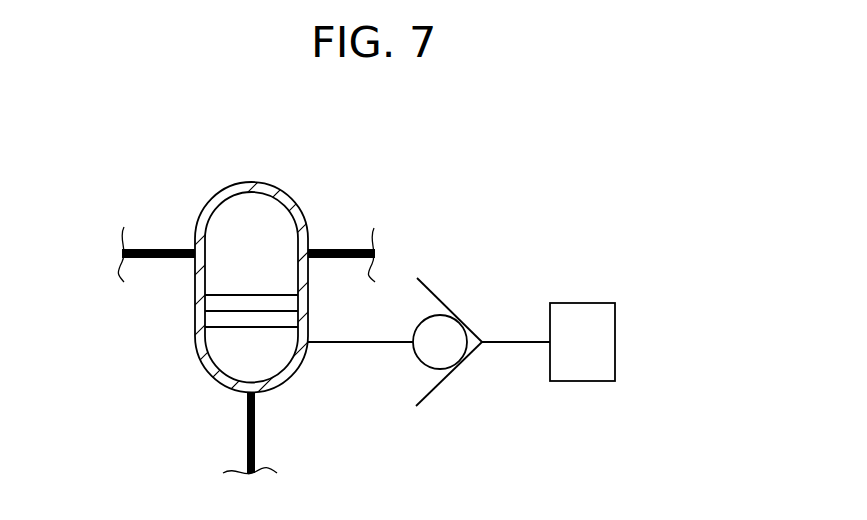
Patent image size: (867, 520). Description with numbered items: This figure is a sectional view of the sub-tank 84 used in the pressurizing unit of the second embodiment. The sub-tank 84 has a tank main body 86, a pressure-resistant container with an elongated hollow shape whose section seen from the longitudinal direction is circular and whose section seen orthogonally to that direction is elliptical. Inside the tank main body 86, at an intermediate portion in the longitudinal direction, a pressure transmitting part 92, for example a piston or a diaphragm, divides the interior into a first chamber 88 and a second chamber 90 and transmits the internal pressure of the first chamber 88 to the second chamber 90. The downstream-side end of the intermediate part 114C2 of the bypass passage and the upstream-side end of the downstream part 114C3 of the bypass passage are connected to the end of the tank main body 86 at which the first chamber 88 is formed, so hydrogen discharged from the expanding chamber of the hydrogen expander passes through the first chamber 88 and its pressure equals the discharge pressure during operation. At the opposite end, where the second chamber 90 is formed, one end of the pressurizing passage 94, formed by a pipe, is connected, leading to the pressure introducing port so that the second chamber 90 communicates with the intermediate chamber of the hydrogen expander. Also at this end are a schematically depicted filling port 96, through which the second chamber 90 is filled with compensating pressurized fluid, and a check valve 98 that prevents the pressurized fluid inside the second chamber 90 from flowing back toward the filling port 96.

The sub-tank 84 is at (540, 206).
The tank main body 86 is at (292, 205).
The first chamber 88 is at (244, 212).
The second chamber 90 is at (222, 352).
The pressure transmitting part 92 is at (225, 293).
The pressurizing passage 94 is at (257, 428).
The filling port 96 is at (585, 381).
The check valve 98 is at (443, 383).
The intermediate part 114C2 is at (160, 247).
The downstream part 114C3 is at (330, 248).